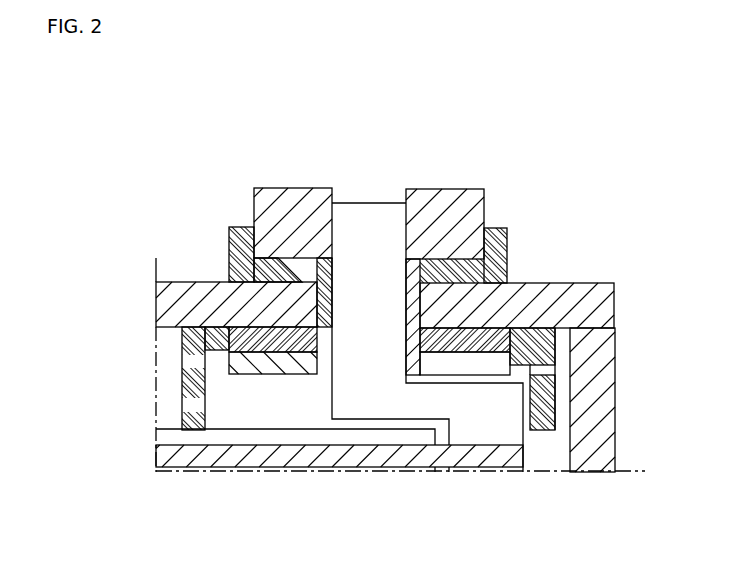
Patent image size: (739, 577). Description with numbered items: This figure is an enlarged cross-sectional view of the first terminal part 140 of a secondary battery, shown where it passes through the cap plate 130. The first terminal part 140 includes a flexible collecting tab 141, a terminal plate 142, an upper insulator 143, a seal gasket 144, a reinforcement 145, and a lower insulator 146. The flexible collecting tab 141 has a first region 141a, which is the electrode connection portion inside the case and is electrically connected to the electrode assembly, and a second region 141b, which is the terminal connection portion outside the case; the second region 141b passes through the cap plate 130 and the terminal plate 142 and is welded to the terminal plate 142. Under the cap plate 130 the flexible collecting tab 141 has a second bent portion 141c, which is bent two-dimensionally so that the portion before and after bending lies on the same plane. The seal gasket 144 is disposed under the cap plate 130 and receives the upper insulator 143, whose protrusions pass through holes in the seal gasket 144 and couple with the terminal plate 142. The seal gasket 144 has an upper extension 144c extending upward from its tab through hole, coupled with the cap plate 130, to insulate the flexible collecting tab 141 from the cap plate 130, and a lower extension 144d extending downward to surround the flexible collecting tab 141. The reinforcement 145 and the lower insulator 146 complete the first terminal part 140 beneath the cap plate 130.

The cap plate 130 is at (583, 288).
The first terminal part 140 is at (399, 323).
The flexible collecting tab 141 is at (399, 341).
The first region 141a is at (495, 430).
The second region 141b is at (362, 203).
The second bent portion 141c is at (391, 404).
The terminal plate 142 is at (480, 200).
The upper insulator 143 is at (240, 228).
The seal gasket 144 is at (558, 384).
The upper extension 144c is at (465, 268).
The lower extension 144d is at (422, 363).
The reinforcement 145 is at (278, 368).
The lower insulator 146 is at (542, 413).